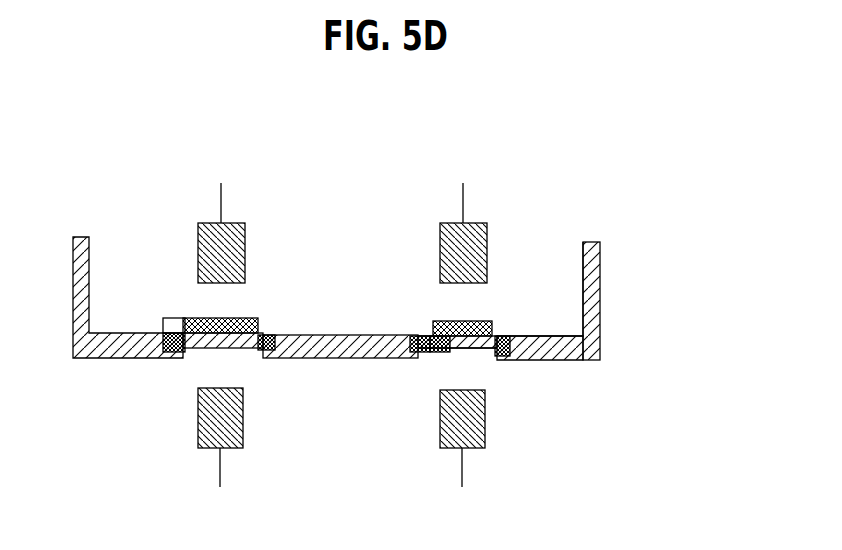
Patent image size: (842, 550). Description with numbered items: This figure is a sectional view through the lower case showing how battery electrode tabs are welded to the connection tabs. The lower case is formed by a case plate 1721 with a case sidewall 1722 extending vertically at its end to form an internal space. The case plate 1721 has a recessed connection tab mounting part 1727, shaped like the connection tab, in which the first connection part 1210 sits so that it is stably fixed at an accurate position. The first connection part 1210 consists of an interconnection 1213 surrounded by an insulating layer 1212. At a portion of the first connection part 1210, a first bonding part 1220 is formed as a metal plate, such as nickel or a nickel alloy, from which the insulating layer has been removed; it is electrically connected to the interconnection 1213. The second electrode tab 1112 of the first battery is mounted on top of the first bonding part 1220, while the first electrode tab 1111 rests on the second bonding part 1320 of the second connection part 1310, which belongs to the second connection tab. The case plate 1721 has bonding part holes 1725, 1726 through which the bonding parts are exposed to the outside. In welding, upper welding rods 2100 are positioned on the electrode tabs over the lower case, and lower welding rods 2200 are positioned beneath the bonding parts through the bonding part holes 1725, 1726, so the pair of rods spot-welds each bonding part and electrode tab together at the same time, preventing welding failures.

The first electrode tab 1111 is at (185, 330).
The second electrode tab 1112 is at (492, 328).
The first connection part 1210 is at (529, 312).
The insulating layer 1212 is at (526, 358).
The interconnection 1213 is at (505, 349).
The first bonding part 1220 is at (430, 335).
The second connection part 1310 is at (283, 305).
The second bonding part 1320 is at (182, 332).
The case plate 1721 is at (586, 375).
The case sidewall 1722 is at (606, 282).
The bonding part hole 1725 is at (192, 349).
The bonding part hole 1726 is at (440, 350).
The connection tab mounting part 1727 is at (170, 358).
The upper welding rod 2100 is at (236, 222).
The lower welding rod 2200 is at (230, 450).